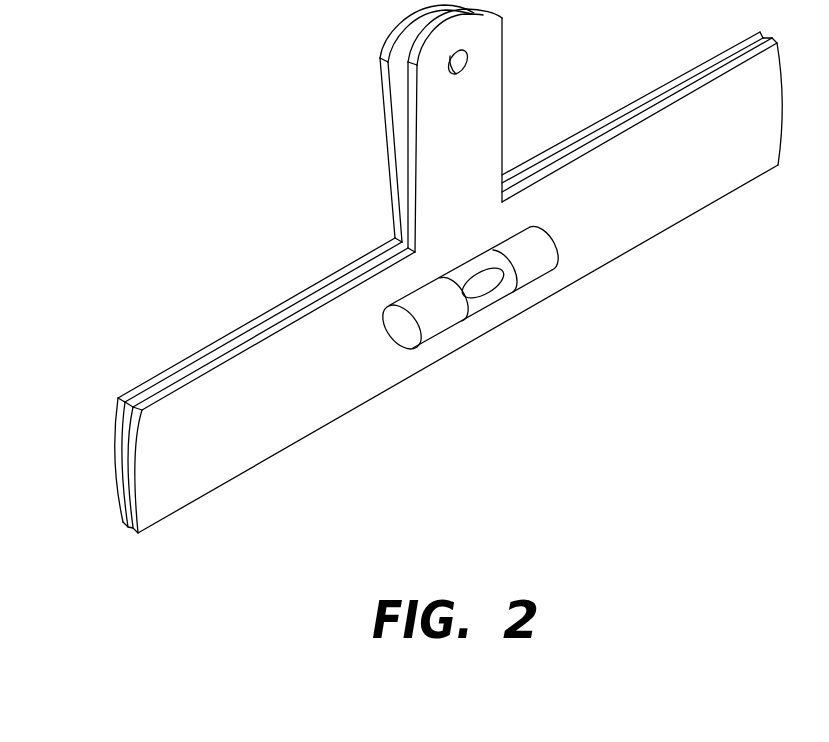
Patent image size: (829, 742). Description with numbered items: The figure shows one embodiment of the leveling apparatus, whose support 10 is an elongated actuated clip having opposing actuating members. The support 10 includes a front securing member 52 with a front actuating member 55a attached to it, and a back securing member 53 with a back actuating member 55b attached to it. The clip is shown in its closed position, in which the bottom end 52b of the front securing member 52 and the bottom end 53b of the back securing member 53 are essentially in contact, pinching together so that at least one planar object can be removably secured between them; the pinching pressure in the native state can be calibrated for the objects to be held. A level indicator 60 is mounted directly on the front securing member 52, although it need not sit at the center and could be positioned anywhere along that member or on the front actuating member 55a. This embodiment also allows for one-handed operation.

The support 10 is at (108, 120).
The front securing member 52 is at (207, 382).
The bottom end of front securing member 52b is at (137, 532).
The back securing member 53 is at (152, 382).
The bottom end of back securing member 53b is at (123, 528).
The front actuating member 55a is at (493, 75).
The back actuating member 55b is at (383, 103).
The level indicator 60 is at (438, 325).